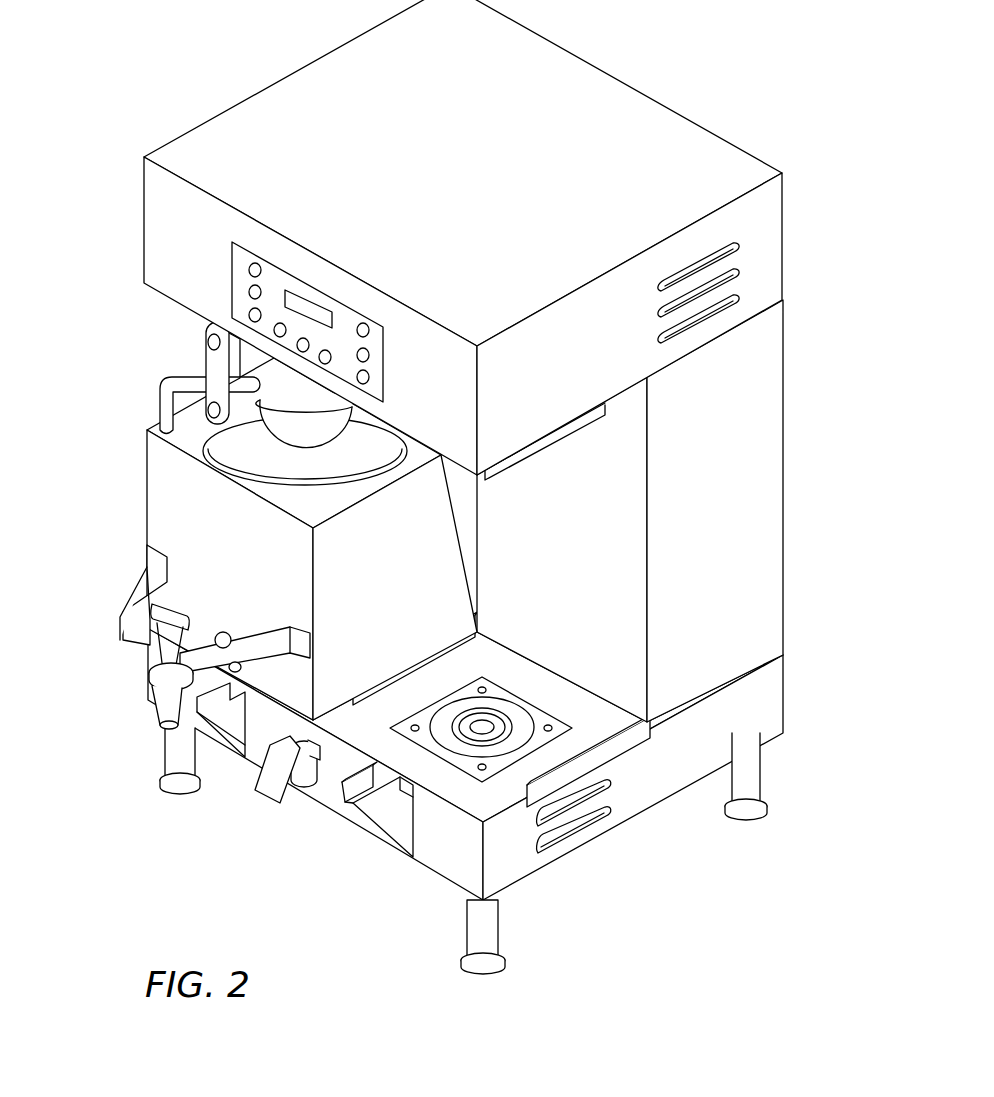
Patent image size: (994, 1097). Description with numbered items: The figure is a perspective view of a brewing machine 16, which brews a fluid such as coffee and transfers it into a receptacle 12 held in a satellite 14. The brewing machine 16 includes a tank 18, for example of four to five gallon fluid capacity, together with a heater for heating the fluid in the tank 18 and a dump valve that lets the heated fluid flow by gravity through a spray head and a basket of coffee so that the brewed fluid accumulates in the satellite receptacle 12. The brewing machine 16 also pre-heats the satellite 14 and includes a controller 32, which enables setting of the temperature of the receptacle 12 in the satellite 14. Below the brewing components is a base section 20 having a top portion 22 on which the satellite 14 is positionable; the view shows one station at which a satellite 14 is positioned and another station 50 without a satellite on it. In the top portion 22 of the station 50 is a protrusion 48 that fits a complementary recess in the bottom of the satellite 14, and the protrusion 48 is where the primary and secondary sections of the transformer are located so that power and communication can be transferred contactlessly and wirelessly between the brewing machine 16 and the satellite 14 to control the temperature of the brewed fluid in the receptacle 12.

The receptacle 12 is at (235, 513).
The satellite 14 is at (163, 537).
The brewing machine 16 is at (556, 71).
The tank 18 is at (687, 477).
The base section 20 is at (648, 780).
The top portion 22 is at (590, 733).
The controller 32 is at (240, 282).
The protrusion 48 is at (397, 785).
The station 50 is at (463, 792).